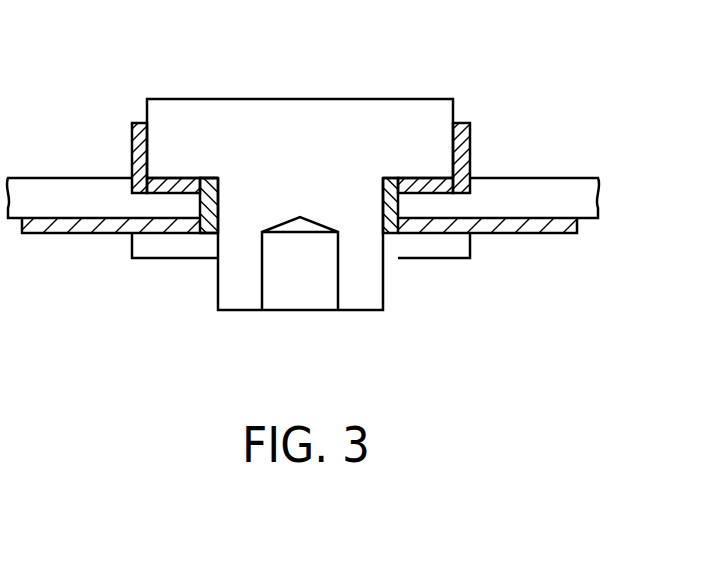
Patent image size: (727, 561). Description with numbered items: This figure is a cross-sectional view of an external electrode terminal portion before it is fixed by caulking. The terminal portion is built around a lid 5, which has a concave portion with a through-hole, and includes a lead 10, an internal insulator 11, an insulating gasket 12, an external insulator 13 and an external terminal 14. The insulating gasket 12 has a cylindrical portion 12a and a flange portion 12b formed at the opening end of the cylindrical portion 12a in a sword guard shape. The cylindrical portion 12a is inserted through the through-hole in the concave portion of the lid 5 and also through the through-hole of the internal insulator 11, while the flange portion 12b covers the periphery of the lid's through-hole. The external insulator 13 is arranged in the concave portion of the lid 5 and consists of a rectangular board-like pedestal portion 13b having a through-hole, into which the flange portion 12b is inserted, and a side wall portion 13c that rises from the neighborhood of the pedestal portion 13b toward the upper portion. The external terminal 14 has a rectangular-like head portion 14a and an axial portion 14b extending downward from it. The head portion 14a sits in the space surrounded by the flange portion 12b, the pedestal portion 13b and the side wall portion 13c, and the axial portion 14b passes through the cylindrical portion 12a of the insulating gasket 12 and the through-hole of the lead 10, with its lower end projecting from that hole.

The lid 5 is at (562, 187).
The lead 10 is at (458, 259).
The internal insulator 11 is at (557, 234).
The insulating gasket 12 is at (294, 192).
The cylindrical portion 12a is at (210, 234).
The flange portion 12b is at (205, 177).
The external insulator 13 is at (299, 193).
The pedestal portion 13b is at (150, 187).
The side wall portion 13c is at (132, 153).
The external terminal 14 is at (300, 203).
The head portion 14a is at (293, 120).
The axial portion 14b is at (243, 311).